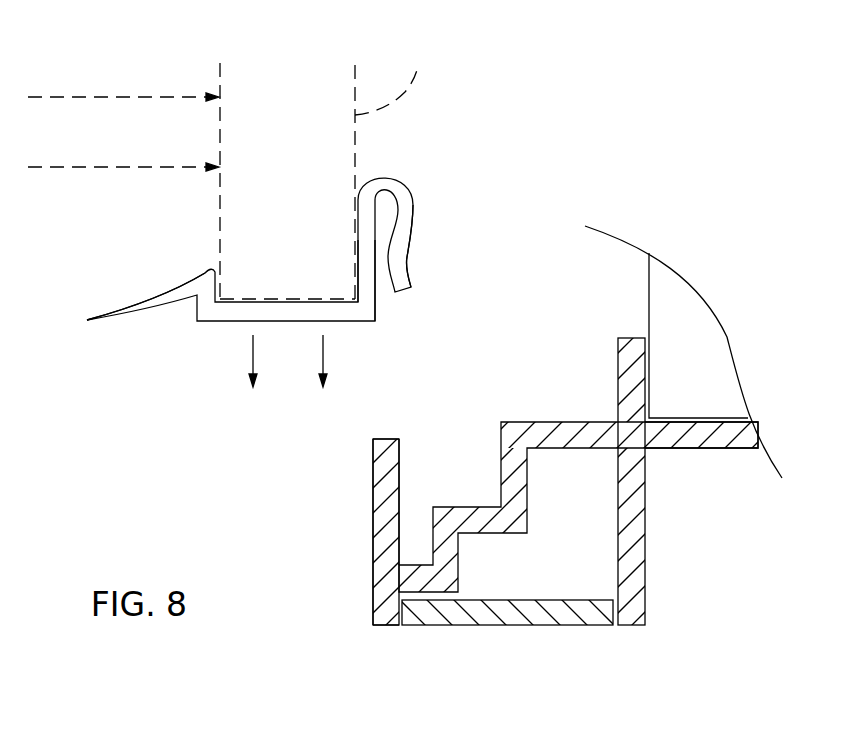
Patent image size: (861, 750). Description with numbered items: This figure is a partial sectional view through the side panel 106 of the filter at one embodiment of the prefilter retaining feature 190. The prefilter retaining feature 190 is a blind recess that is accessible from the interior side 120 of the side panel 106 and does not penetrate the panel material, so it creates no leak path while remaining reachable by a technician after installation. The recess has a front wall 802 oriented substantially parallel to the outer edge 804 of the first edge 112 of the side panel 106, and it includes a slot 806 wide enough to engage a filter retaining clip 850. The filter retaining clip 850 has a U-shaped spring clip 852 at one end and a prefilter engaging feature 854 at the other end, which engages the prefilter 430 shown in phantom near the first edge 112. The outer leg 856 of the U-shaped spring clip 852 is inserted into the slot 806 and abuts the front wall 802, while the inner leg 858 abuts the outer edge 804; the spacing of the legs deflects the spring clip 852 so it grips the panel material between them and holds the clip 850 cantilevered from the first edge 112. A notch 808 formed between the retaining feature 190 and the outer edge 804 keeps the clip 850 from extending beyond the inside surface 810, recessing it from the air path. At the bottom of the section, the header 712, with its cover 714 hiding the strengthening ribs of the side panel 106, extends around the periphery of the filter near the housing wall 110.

The prefilter 430 is at (401, 77).
The U-shaped spring clip 852 is at (406, 170).
The outer leg 856 is at (411, 234).
The inner leg 858 is at (358, 240).
The prefilter engaging feature 854 is at (182, 316).
The filter retaining clip 850 is at (215, 322).
The prefilter retaining feature 190 is at (441, 440).
The interior side 120 is at (605, 410).
The housing wall 110 is at (697, 348).
The front wall 802 is at (399, 456).
The inside surface 810 is at (562, 422).
The notch 808 is at (387, 439).
The outer edge 804 is at (373, 459).
The side panel 106 is at (712, 442).
The slot 806 is at (422, 542).
The first edge 112 is at (356, 545).
The header 712 is at (360, 634).
The cover 714 is at (575, 622).